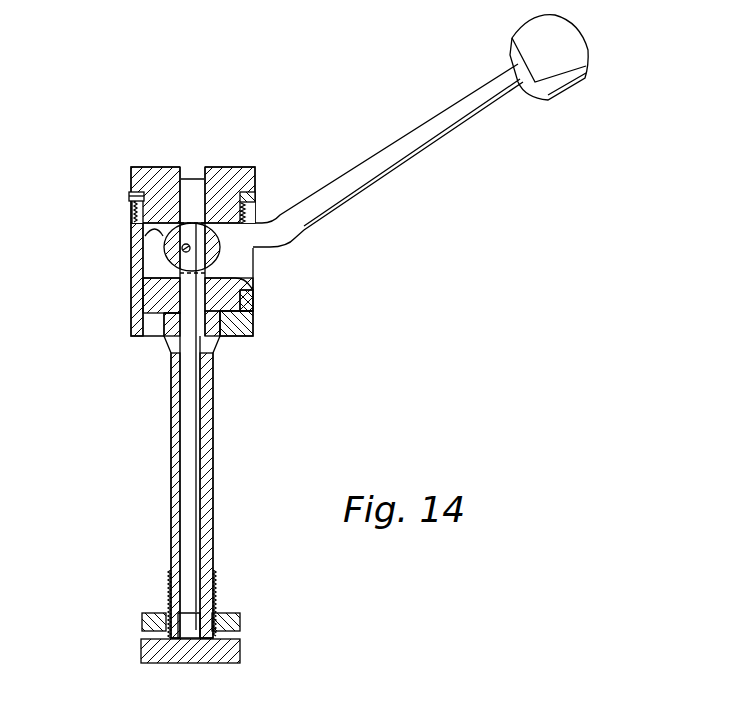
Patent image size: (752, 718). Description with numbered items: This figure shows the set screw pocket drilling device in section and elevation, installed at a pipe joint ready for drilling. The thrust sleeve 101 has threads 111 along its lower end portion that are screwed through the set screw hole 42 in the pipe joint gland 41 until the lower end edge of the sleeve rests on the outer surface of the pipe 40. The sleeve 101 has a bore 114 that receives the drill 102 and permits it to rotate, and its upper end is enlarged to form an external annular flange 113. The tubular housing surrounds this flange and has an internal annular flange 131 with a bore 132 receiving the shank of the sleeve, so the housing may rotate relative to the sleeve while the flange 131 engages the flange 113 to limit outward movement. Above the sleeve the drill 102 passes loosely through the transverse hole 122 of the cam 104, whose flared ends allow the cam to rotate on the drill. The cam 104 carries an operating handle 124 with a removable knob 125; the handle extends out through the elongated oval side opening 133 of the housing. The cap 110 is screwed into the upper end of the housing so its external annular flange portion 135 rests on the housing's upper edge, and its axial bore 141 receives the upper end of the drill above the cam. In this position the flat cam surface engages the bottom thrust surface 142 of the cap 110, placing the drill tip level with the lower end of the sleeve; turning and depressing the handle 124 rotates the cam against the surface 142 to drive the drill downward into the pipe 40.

The pipe 40 is at (190, 655).
The pipe joint gland 41 is at (158, 614).
The set screw hole 42 is at (212, 620).
The thrust sleeve 101 is at (170, 445).
The drill 102 is at (205, 420).
The cam 104 is at (165, 253).
The cap 110 is at (160, 172).
The threads 111 is at (170, 596).
The external annular flange 113 is at (242, 300).
The bore 114 is at (185, 300).
The transverse hole 122 is at (222, 248).
The operating handle 124 is at (466, 119).
The removable knob 125 is at (560, 83).
The internal annular flange 131 is at (238, 338).
The bore 132 is at (213, 330).
The elongated oval side opening 133 is at (243, 283).
The external annular flange portion 135 is at (132, 178).
The axial bore 141 is at (200, 166).
The thrust surface 142 is at (145, 235).